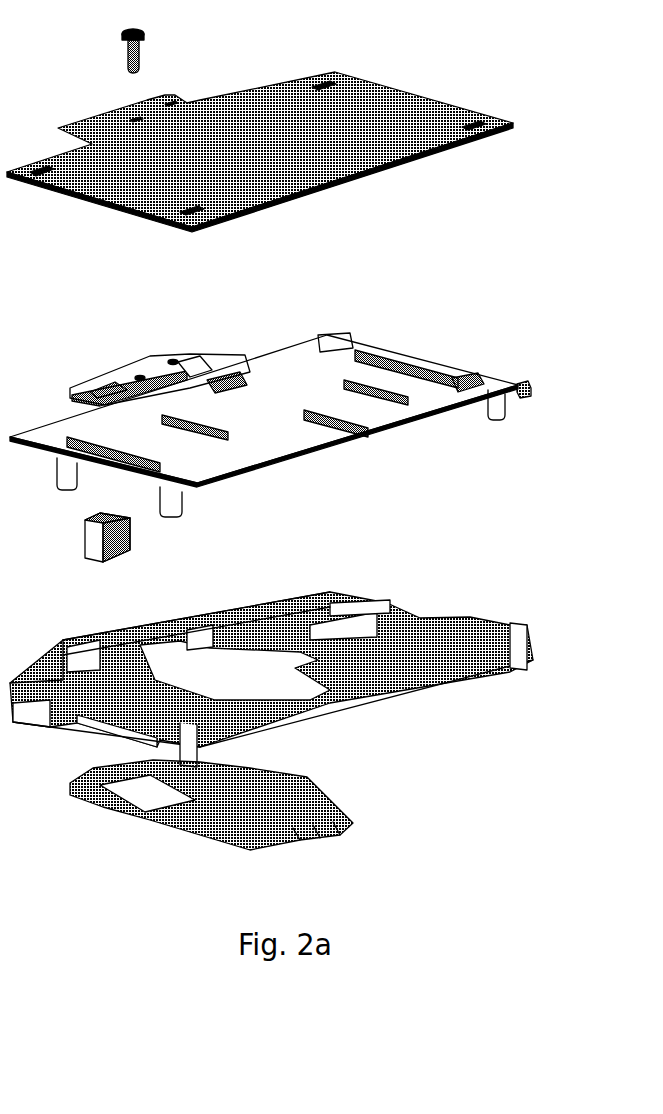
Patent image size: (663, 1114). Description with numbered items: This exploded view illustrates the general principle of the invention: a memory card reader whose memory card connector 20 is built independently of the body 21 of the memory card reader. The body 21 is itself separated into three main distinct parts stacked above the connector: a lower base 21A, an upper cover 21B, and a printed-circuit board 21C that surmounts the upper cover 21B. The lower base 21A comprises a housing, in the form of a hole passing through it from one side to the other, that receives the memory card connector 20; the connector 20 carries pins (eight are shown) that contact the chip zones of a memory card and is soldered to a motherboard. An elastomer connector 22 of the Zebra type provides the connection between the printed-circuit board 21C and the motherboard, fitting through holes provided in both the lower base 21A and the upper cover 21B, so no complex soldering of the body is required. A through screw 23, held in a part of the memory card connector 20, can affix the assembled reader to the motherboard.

The memory card connector 20 is at (408, 747).
The body of the memory card reader 21 is at (553, 17).
The lower base 21A is at (430, 618).
The upper cover 21B is at (462, 382).
The printed-circuit board 21C is at (380, 87).
The elastomer connector 22 is at (87, 545).
The screw 23 is at (127, 52).